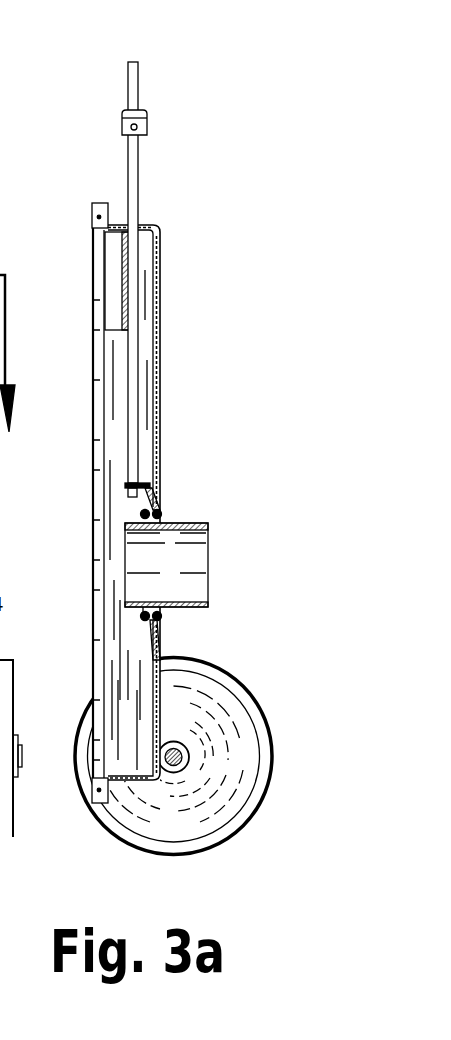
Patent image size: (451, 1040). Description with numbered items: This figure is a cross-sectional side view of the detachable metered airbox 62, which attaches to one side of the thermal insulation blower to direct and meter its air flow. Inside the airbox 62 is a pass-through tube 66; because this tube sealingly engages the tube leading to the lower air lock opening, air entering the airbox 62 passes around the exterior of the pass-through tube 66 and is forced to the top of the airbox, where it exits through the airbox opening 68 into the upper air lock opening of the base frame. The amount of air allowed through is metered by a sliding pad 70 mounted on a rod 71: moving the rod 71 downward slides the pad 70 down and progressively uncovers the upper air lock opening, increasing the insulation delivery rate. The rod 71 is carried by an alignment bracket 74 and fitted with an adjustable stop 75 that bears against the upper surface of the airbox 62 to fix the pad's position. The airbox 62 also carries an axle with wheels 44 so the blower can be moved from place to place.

The wheels 44 is at (147, 855).
The metered airbox 62 is at (160, 407).
The pass-through tube 66 is at (186, 522).
The airbox opening 68 is at (94, 272).
The sliding pad 70 is at (120, 332).
The rod 71 is at (141, 176).
The alignment bracket 74 is at (93, 482).
The adjustable stop 75 is at (147, 121).